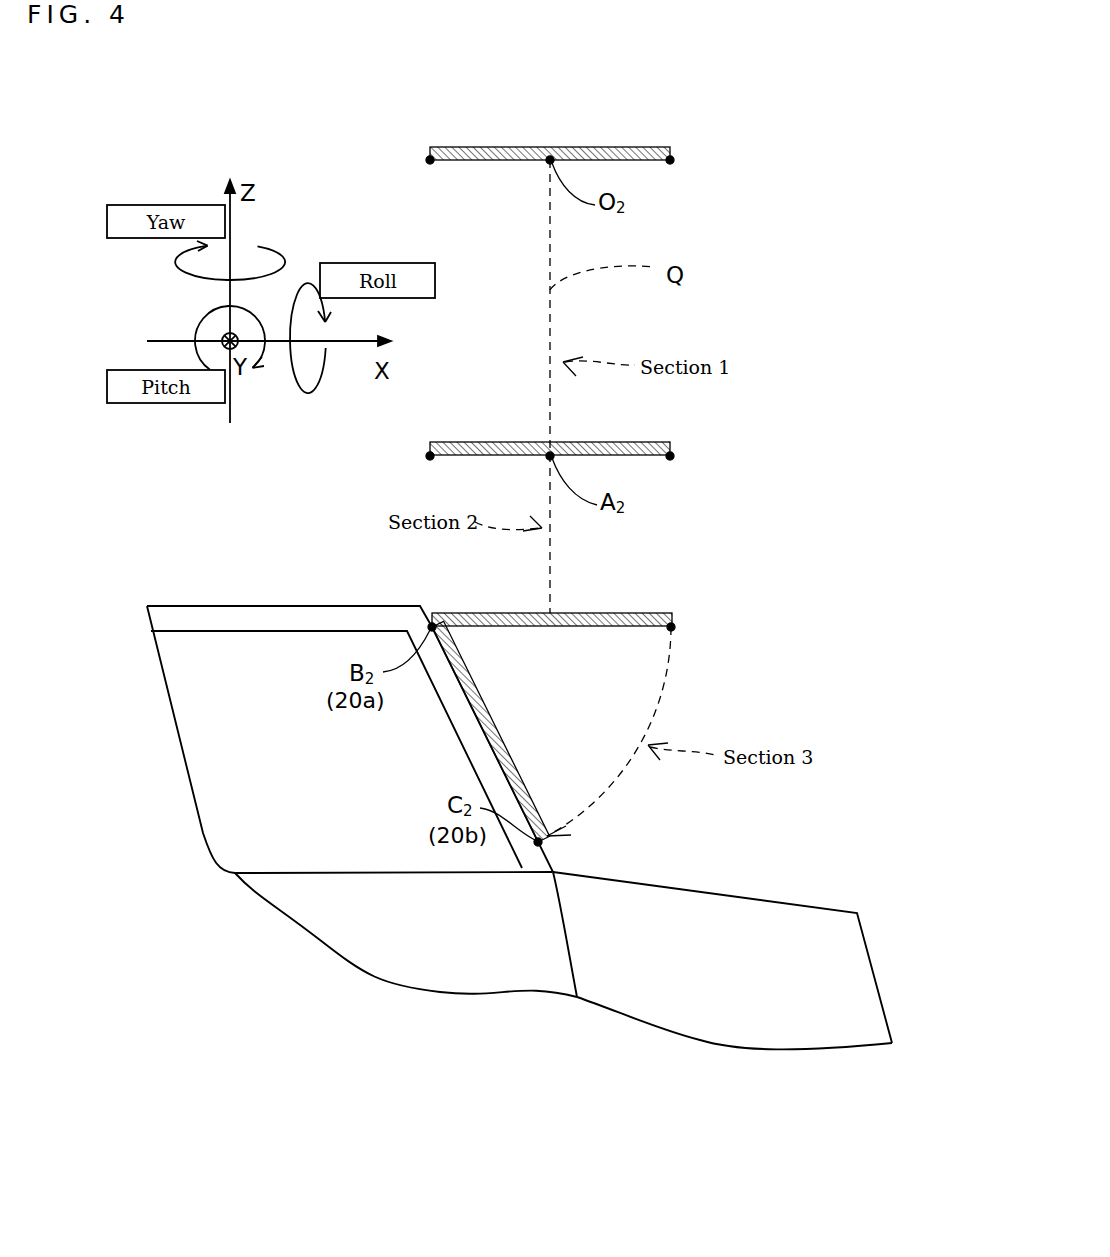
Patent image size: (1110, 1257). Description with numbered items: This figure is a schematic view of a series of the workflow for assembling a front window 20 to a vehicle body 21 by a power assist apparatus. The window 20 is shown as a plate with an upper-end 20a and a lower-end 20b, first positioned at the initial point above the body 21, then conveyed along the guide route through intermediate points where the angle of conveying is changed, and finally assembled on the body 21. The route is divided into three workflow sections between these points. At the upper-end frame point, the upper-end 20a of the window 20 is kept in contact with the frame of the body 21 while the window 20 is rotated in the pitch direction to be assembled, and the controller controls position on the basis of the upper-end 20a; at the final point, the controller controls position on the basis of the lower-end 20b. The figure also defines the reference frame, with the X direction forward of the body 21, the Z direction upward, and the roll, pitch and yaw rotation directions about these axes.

The window 20 is at (672, 148).
The upper-end of the window 20a is at (428, 163).
The lower-end of the window 20b is at (672, 163).
The vehicle body 21 is at (283, 605).